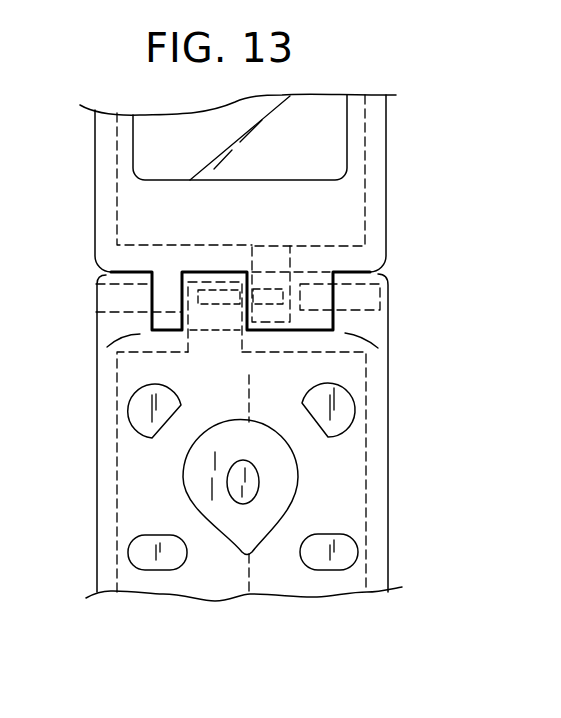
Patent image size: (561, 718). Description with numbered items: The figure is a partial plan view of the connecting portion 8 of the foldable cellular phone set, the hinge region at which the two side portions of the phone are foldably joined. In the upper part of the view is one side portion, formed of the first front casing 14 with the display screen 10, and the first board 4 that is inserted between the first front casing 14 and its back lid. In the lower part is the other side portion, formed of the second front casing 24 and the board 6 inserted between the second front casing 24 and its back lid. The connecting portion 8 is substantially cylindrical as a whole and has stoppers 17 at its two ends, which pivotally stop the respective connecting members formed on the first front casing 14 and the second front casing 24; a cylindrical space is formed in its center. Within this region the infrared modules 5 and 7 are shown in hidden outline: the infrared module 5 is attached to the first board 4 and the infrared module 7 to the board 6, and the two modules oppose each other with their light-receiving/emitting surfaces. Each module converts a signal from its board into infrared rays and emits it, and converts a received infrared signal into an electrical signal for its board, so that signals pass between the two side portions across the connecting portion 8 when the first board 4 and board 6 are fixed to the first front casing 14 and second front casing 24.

The first board 4 is at (357, 147).
The first front casing 14 is at (373, 176).
The display screen 10 is at (148, 150).
The connecting portion 8 is at (395, 277).
The stoppers 17 is at (110, 300).
The infrared module 5 is at (272, 295).
The infrared module 7 is at (216, 304).
The board 6 is at (350, 513).
The second front casing 24 is at (377, 478).